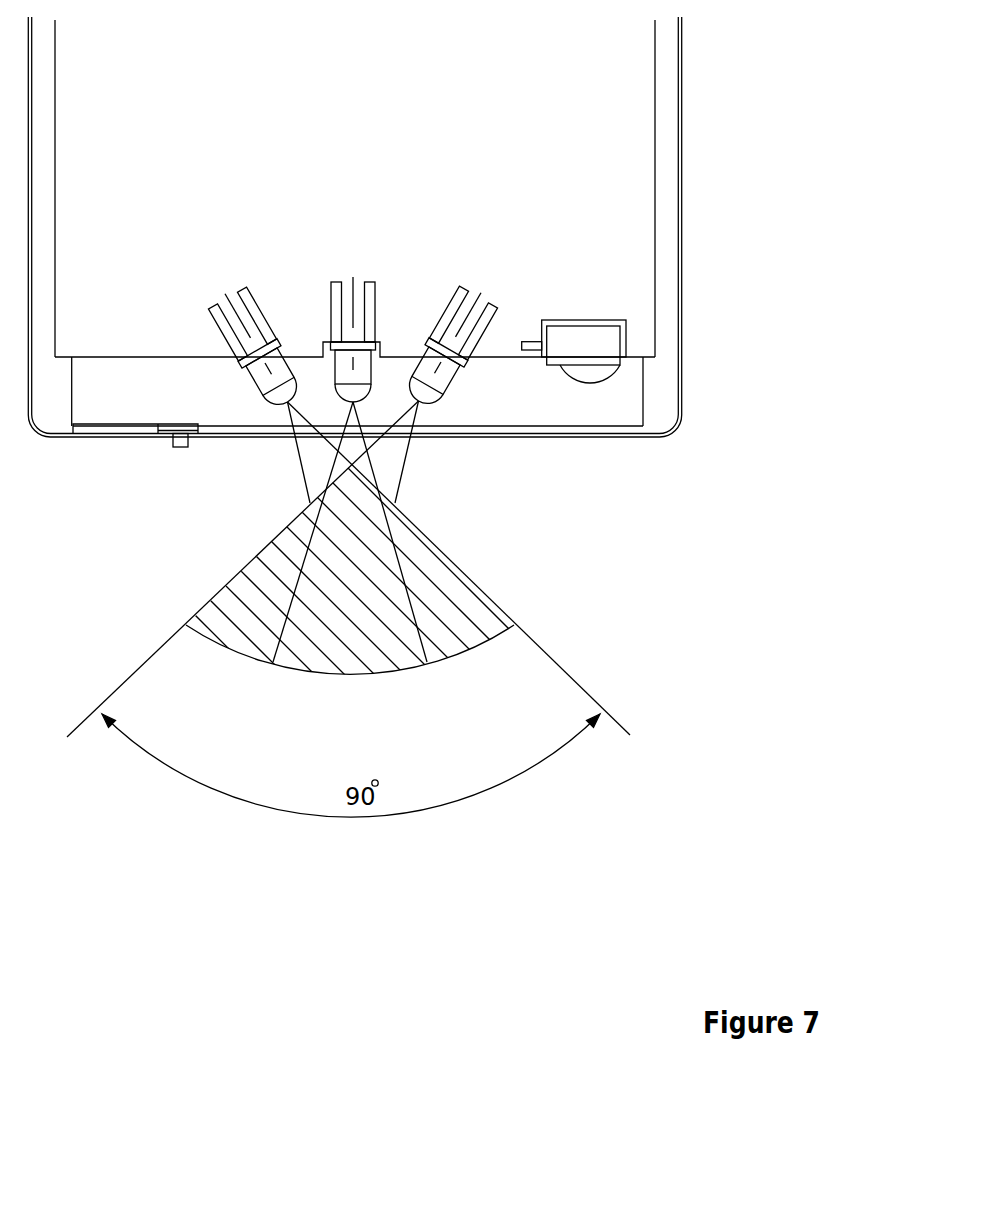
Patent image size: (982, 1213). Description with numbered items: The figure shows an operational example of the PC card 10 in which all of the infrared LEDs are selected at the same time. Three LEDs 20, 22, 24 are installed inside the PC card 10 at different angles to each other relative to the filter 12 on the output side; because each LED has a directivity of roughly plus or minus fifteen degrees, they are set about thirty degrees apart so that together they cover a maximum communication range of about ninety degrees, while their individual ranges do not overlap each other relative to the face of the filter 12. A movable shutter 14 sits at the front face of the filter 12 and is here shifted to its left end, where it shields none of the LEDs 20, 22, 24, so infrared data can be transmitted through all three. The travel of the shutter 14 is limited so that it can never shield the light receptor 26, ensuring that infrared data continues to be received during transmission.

The PC card 10 is at (682, 118).
The filter 12 is at (565, 440).
The movable shutter 14 is at (85, 437).
The LED 20 is at (218, 288).
The LED 22 is at (360, 273).
The LED 24 is at (478, 282).
The light receptor 26 is at (592, 320).